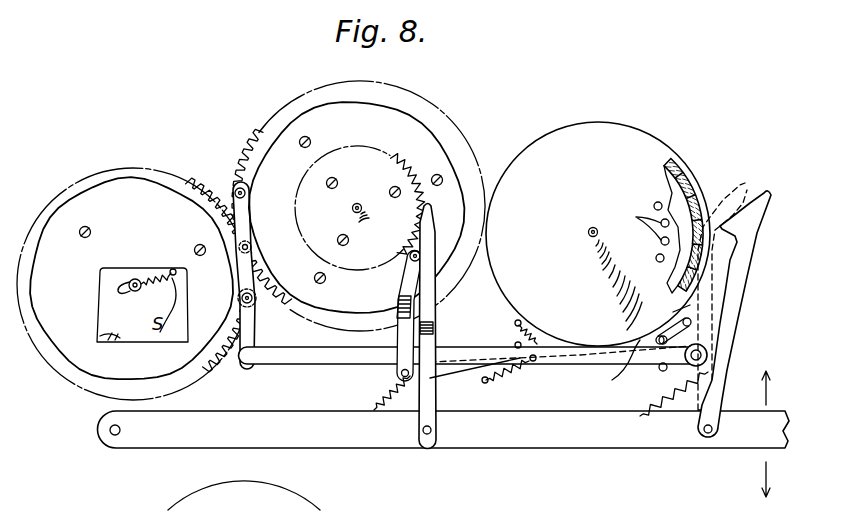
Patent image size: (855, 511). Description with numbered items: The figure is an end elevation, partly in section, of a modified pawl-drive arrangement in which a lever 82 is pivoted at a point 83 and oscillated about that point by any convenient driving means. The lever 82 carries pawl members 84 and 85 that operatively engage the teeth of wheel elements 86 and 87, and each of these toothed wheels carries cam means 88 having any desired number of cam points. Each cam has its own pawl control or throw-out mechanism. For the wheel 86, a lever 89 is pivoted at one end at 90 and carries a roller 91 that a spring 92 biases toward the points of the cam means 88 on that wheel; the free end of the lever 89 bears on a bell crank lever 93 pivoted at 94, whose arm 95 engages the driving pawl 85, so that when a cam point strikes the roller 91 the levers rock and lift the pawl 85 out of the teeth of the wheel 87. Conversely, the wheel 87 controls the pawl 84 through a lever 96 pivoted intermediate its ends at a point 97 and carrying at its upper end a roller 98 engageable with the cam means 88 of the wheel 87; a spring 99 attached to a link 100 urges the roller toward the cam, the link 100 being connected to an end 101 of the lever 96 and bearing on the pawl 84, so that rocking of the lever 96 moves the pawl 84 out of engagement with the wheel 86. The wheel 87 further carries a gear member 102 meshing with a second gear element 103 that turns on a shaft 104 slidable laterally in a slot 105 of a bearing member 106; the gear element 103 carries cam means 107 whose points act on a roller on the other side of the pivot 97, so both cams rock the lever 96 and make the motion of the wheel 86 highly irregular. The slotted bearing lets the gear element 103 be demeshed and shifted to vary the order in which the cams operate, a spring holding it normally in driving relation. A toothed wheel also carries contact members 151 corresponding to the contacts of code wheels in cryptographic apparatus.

The lever 82 is at (603, 437).
The pivot point 83 is at (112, 434).
The pawl member 84 is at (728, 322).
The pawl member 85 is at (437, 331).
The wheel element 86 is at (582, 108).
The wheel element 87 is at (435, 91).
The cam means 88 is at (352, 103).
The lever 89 is at (613, 361).
The pivot 90 is at (676, 331).
The roller 91 is at (656, 378).
The spring 92 is at (512, 334).
The bell crank lever 93 is at (460, 372).
The pivot 94 is at (403, 376).
The arm 95 is at (397, 336).
The lever 96 is at (253, 328).
The pivot point 97 is at (249, 242).
The roller 98 is at (237, 190).
The spring 99 is at (509, 375).
The link 100 is at (322, 353).
The end of lever 101 is at (247, 362).
The gear member 102 is at (300, 88).
The gear element 103 is at (72, 186).
The shaft 104 is at (146, 291).
The slot 105 is at (134, 279).
The bearing member 106 is at (125, 333).
The cam means 107 is at (150, 188).
The contact members 151 is at (654, 207).